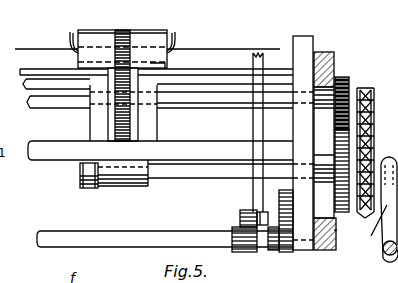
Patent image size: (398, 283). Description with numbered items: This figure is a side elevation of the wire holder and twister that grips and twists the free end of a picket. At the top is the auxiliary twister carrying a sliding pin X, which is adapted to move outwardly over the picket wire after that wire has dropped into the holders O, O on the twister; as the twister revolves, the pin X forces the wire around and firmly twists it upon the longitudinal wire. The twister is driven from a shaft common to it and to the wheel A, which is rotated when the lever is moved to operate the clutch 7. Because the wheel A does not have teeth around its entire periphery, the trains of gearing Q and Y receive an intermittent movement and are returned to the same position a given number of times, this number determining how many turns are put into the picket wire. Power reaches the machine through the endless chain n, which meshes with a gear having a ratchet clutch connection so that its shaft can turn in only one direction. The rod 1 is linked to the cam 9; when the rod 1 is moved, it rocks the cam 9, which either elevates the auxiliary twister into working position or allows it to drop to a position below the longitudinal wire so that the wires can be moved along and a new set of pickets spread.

The sliding pin X is at (122, 40).
The holders O is at (70, 42).
The train of gearing Q is at (130, 128).
The train of gearing Y is at (357, 90).
The endless chain n is at (366, 89).
The clutch 7 is at (381, 209).
The wheel A is at (345, 227).
The rod 1 is at (250, 218).
The cam 9 is at (280, 229).